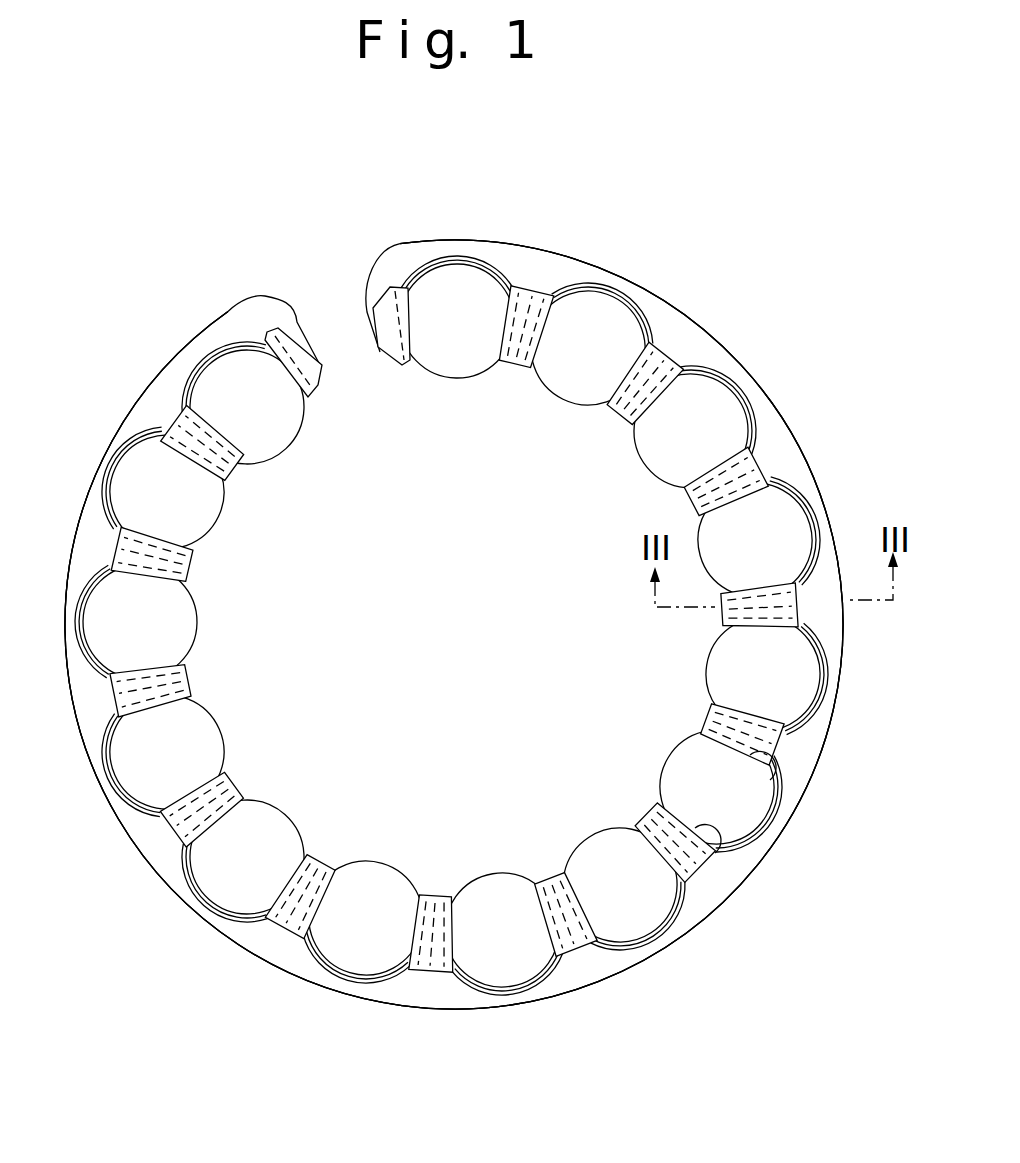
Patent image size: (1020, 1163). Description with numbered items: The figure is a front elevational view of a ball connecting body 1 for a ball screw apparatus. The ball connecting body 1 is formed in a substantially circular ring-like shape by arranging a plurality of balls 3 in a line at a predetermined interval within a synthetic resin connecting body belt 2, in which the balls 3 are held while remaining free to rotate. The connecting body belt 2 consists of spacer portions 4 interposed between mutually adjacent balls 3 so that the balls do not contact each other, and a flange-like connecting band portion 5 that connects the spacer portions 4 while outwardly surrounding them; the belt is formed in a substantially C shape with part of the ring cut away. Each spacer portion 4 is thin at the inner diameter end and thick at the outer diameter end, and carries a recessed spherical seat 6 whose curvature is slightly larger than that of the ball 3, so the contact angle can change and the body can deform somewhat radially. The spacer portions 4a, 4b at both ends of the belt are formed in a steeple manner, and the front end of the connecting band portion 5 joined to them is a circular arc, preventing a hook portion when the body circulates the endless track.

The ball connecting body 1 is at (710, 268).
The connecting body belt 2 is at (730, 335).
The ball 3 is at (723, 403).
The spacer portion 4 is at (790, 733).
The spacer portion (end) 4a is at (295, 342).
The spacer portion (end) 4b is at (380, 320).
The connecting band portion 5 is at (783, 450).
The spherical seat 6 is at (765, 775).